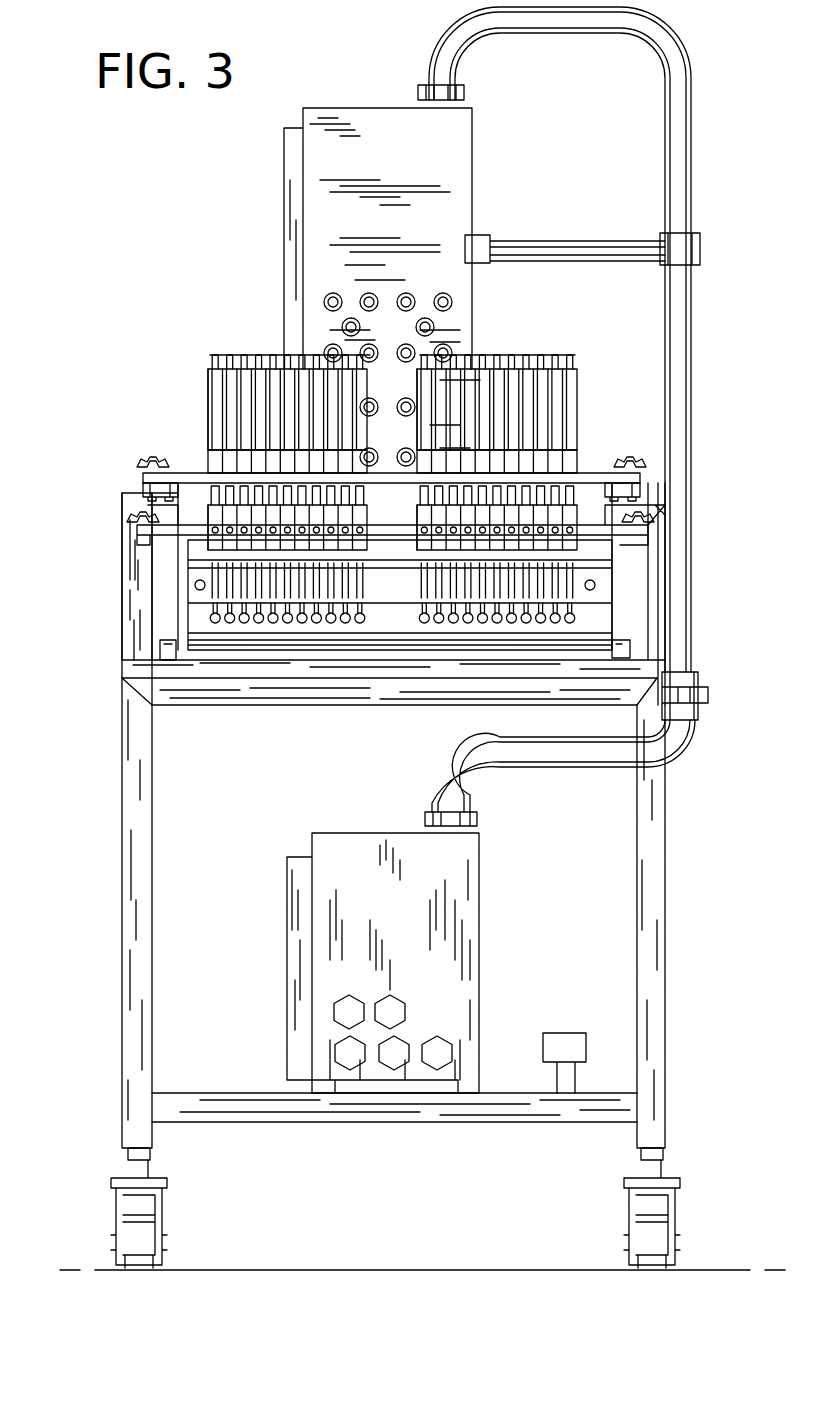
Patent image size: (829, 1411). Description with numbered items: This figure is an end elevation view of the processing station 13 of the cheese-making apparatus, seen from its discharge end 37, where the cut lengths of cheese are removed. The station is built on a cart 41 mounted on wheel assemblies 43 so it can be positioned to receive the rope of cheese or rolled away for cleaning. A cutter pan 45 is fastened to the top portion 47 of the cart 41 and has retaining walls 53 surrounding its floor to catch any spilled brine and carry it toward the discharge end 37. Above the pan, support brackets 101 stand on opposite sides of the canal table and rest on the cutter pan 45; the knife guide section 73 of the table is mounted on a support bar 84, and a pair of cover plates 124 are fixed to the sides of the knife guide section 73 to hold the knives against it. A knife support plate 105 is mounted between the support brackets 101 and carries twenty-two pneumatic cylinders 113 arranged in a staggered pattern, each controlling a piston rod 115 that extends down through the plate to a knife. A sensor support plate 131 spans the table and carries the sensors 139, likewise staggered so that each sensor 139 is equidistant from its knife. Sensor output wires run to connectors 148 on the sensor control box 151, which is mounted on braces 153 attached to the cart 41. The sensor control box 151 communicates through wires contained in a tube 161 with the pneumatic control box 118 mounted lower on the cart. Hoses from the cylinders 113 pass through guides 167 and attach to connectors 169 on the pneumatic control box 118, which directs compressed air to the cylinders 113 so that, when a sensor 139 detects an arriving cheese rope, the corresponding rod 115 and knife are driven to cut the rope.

The processing station 13 is at (205, 259).
The discharge end 37 is at (99, 644).
The cart 41 is at (122, 890).
The wheel assemblies 43 is at (600, 1182).
The cutter pan 45 is at (265, 675).
The top portion 47 is at (365, 693).
The retaining walls 53 is at (160, 655).
The knife guide section 73 is at (203, 625).
The support bar 84 is at (605, 635).
The support brackets 101 is at (600, 612).
The knife support plate 105 is at (202, 472).
The pneumatic cylinders 113 is at (545, 389).
The piston rod 115 is at (583, 483).
The pneumatic control box 118 is at (562, 355).
The cover plates 124 is at (590, 572).
The sensor support plate 131 is at (140, 502).
The sensors 139 is at (400, 512).
The connectors 148 is at (425, 348).
The sensor control box 151 is at (415, 157).
The braces 153 is at (125, 640).
The tube 161 is at (700, 165).
The guides 167 is at (568, 1033).
The connectors 169 is at (335, 1054).